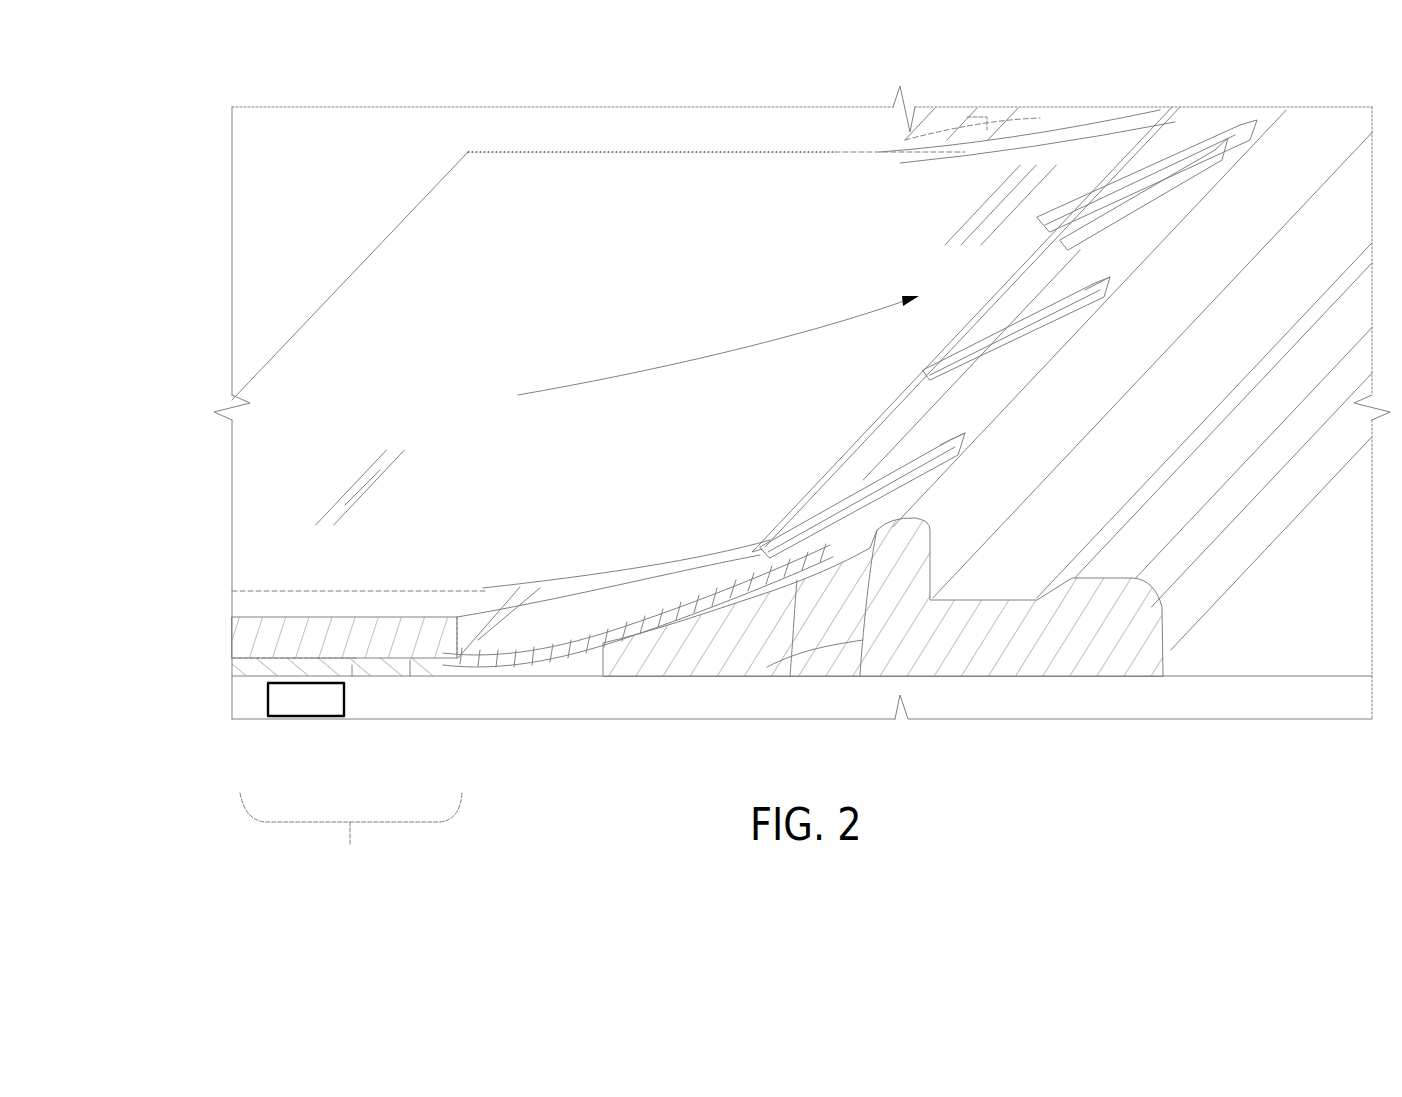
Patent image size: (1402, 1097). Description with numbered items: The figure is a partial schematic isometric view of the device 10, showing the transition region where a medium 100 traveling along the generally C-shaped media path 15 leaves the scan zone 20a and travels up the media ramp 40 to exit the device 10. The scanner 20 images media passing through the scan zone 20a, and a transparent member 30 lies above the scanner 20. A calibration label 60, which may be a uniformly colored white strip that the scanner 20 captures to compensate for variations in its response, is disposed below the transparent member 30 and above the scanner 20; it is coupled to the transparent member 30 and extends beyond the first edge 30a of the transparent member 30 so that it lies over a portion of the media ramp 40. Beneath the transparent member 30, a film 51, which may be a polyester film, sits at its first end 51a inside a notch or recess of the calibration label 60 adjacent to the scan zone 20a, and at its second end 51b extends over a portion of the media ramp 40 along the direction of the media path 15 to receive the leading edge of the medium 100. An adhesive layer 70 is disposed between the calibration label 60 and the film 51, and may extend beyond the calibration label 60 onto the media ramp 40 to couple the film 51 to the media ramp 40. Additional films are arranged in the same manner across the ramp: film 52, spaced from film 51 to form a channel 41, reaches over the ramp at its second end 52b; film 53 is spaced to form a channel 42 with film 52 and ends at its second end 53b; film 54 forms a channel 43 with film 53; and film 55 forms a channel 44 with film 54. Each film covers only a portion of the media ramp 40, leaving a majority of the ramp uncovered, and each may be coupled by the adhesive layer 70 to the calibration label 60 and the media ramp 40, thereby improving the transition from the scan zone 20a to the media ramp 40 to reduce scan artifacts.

The device 10 is at (802, 378).
The media path 15 is at (575, 443).
The scanner 20 is at (306, 736).
The scan zone 20a is at (351, 839).
The transparent member 30 is at (310, 646).
The first edge 30a is at (272, 533).
The media ramp 40 is at (988, 441).
The channel 41 is at (906, 329).
The channel 42 is at (941, 365).
The channel 43 is at (989, 205).
The channel 44 is at (1027, 111).
The film element 51 is at (411, 715).
The first end 51a is at (368, 718).
The second end 51b is at (885, 657).
The film 52 is at (711, 542).
The second end 52b is at (865, 414).
The film 53 is at (996, 328).
The second end 53b is at (1023, 283).
The film 54 is at (1147, 176).
The film 55 is at (1144, 162).
The calibration label 60 is at (638, 655).
The adhesive layer 70 is at (815, 673).
The medium 100 is at (598, 276).